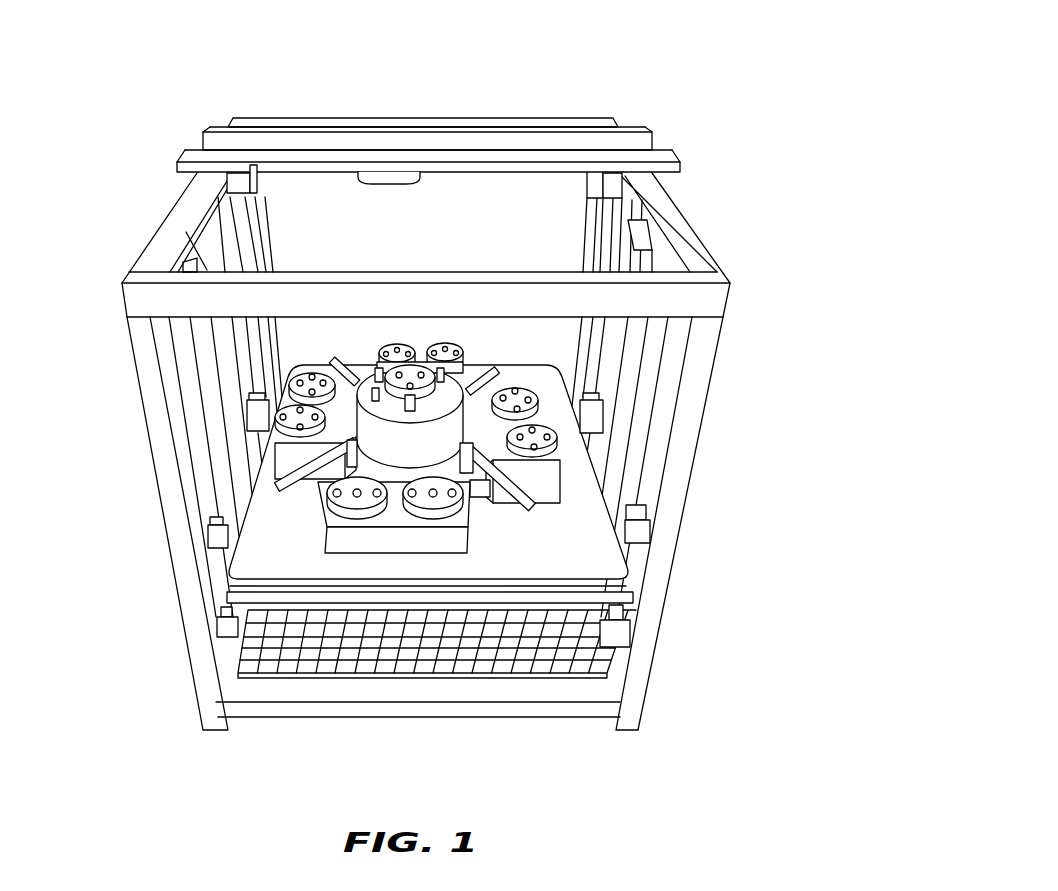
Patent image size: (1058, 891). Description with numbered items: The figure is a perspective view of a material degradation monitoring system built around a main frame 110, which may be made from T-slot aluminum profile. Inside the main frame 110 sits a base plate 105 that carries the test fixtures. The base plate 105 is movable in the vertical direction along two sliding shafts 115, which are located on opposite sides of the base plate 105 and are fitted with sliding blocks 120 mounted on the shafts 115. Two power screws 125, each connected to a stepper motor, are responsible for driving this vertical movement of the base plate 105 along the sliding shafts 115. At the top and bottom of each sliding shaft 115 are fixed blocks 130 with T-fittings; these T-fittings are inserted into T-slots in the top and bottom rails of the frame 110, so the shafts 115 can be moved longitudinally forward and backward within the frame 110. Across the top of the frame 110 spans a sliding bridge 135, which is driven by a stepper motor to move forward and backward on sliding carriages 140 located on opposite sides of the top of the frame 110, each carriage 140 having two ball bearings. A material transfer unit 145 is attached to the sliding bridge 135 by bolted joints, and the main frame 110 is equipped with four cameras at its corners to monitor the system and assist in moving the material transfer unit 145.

The base plate 105 is at (565, 563).
The main frame 110 is at (725, 330).
The sliding shafts 115 is at (642, 458).
The sliding blocks 120 is at (257, 418).
The power screws 125 is at (210, 435).
The fixed blocks 130 is at (250, 179).
The sliding bridge 135 is at (628, 133).
The sliding carriages 140 is at (177, 168).
The material transfer unit 145 is at (412, 184).